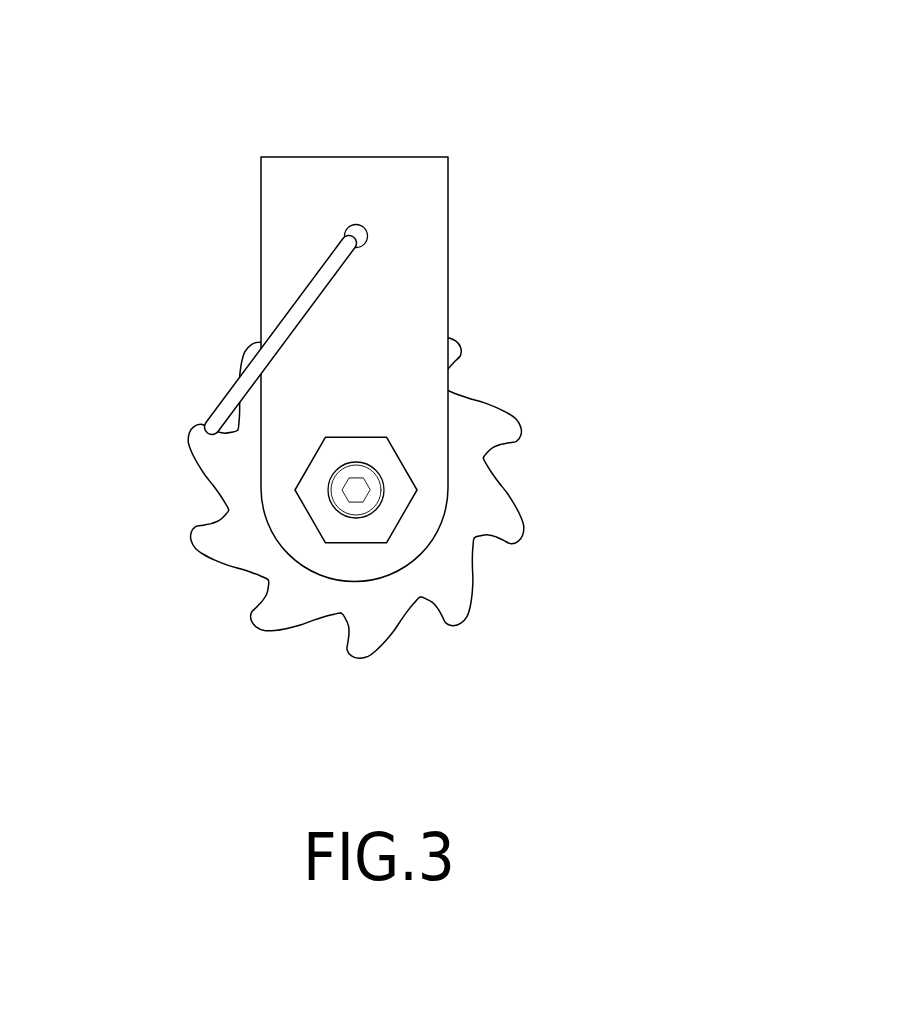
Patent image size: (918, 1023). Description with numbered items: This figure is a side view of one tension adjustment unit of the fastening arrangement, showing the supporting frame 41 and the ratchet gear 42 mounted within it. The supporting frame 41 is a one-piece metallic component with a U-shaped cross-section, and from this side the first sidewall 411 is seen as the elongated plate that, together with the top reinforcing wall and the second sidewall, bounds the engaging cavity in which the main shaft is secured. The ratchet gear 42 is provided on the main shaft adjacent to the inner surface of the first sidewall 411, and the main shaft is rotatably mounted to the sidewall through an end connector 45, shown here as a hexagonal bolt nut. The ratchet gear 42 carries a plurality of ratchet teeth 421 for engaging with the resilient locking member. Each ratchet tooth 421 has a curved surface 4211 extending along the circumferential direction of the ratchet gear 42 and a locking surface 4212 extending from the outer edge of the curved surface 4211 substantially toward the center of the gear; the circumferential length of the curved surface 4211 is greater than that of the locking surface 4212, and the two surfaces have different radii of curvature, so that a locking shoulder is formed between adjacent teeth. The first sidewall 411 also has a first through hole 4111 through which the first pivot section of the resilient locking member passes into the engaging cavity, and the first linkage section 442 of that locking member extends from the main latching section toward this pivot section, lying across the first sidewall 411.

The supporting frame 41 is at (409, 373).
The first sidewall 411 is at (335, 182).
The first through hole 4111 is at (367, 232).
The first linkage section 442 is at (290, 320).
The end connector 45 is at (358, 452).
The ratchet gear 42 is at (463, 520).
The ratchet tooth 421 is at (503, 412).
The curved surface 4211 is at (478, 593).
The locking surface 4212 is at (442, 612).